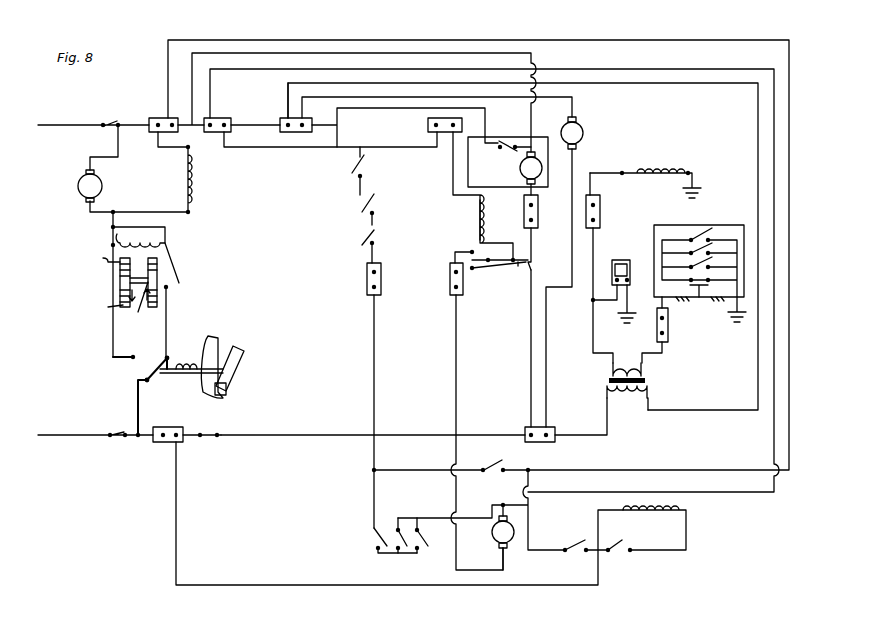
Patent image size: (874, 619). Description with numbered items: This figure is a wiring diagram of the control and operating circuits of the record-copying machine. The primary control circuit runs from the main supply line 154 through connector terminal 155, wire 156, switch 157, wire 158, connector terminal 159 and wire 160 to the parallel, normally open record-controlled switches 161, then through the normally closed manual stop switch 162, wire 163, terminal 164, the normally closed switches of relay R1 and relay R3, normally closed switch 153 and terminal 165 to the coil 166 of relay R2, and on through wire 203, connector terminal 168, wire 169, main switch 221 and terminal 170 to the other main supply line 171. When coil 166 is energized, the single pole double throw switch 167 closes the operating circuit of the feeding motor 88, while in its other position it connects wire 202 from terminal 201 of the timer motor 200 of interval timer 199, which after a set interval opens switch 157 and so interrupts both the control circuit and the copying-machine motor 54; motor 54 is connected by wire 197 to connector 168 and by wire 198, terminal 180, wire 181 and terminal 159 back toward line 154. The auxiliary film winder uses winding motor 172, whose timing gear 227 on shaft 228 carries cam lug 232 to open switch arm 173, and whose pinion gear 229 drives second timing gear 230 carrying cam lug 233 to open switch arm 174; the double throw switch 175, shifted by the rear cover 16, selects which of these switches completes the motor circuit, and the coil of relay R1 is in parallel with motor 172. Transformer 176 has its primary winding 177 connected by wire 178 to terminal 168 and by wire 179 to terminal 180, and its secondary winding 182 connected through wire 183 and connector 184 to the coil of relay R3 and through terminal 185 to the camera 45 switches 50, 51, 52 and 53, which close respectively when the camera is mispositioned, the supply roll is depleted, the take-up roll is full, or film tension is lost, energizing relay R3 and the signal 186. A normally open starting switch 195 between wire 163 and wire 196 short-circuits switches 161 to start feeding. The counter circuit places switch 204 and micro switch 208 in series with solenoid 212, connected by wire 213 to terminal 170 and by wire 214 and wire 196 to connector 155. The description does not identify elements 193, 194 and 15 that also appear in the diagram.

The wire 196 is at (238, 40).
The wire 156 is at (292, 53).
The wire 160 is at (350, 69).
The wire 179 is at (410, 83).
The wire 198 is at (470, 97).
The main supply line 154 is at (70, 125).
The connector terminal 155 is at (156, 118).
The connector terminal 159 is at (222, 118).
The connector terminal 180 is at (288, 108).
The wire 181 is at (270, 125).
The wire 158 is at (378, 108).
The winding motor 172 is at (133, 169).
The relay R1 is at (193, 178).
The terminal 165 is at (428, 125).
The switch 157 is at (503, 139).
The interval timer 199 is at (543, 137).
The timer motor 200 is at (519, 168).
The terminal 201 is at (524, 217).
The motor 54 is at (583, 131).
The wire 197 is at (572, 261).
The coil 166 is at (474, 209).
The relay R2 is at (474, 225).
The single pole double throw switch 167 is at (491, 269).
The wire 202 is at (518, 270).
The wire 203 is at (531, 332).
The relay contact 194 is at (450, 289).
The conductor 193 is at (456, 359).
The normally closed switch 153 is at (355, 169).
The relay R3 is at (360, 205).
The terminal 164 is at (367, 279).
The wire 163 is at (374, 354).
The wire 169 is at (373, 418).
The main supply line 171 is at (78, 435).
The terminal 170 is at (172, 427).
The main switch 221 is at (210, 435).
The connector terminal 168 is at (525, 427).
The wire 178 is at (607, 432).
The switch arm 173 is at (101, 272).
The cam lug 233 is at (160, 267).
The switch arm 174 is at (170, 255).
The cam lug 232 is at (100, 254).
The shaft 228 is at (120, 290).
The timing gear 227 is at (101, 309).
The second timing gear 230 is at (158, 297).
The pinion gear 229 is at (140, 307).
The single pole double throw switch 175 is at (145, 371).
The rear cover 16 is at (244, 351).
The block 15 is at (226, 390).
The camera 45 is at (218, 345).
The normally open switch 53 is at (700, 232).
The normally open switch 52 is at (688, 249).
The normally open switch 51 is at (688, 263).
The normally open switch 50 is at (698, 297).
The connector 184 is at (600, 209).
The wire 183 is at (593, 321).
The audible or visual signal 186 is at (617, 260).
The terminal 185 is at (668, 331).
The secondary winding 182 is at (627, 360).
The transformer 176 is at (646, 379).
The primary winding 177 is at (630, 394).
The starting switch 195 is at (500, 465).
The wire 214 is at (532, 504).
The feeding motor 88 is at (492, 535).
The manual stop switch 162 is at (376, 548).
The normally open switches 161 is at (408, 550).
The wire 213 is at (276, 585).
The micro switch 208 is at (578, 543).
The solenoid 212 is at (650, 512).
The normally open switch 204 is at (624, 556).